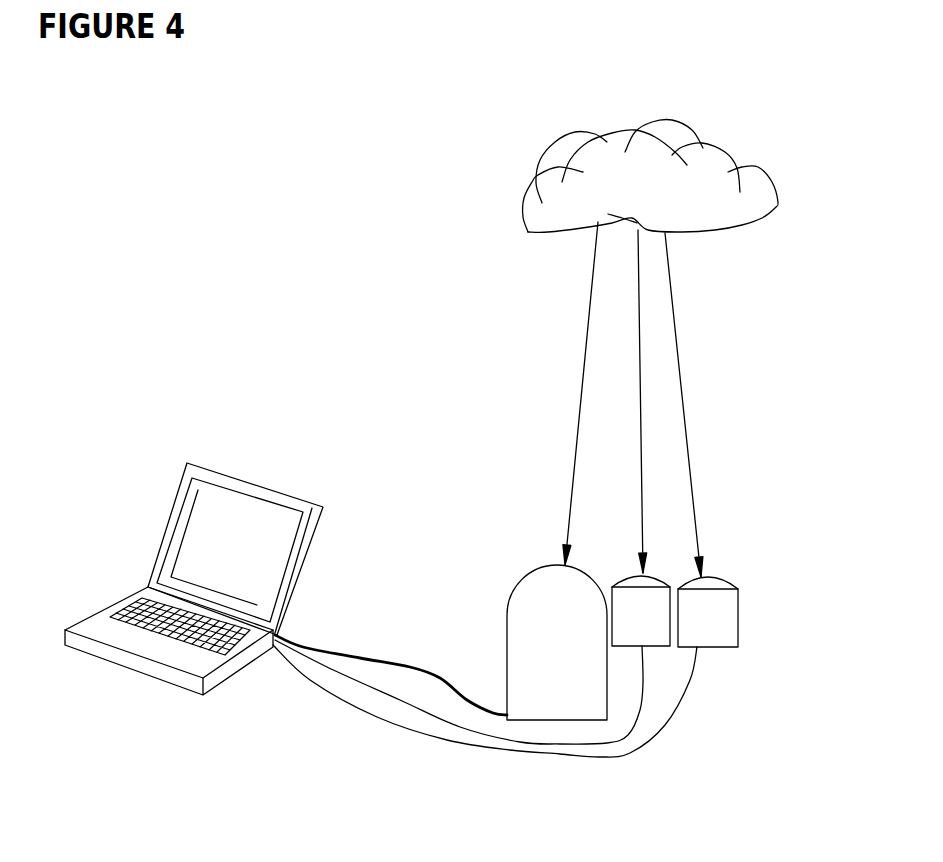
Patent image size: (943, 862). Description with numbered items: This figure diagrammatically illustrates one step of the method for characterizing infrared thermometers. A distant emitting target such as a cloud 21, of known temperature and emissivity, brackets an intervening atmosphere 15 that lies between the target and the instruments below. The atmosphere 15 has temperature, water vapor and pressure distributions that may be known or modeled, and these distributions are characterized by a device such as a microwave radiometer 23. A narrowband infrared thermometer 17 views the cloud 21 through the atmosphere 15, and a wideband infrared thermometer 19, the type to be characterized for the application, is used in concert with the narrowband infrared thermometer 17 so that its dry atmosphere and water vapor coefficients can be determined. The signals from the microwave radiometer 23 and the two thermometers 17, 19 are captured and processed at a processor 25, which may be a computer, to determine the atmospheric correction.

The atmosphere 15 is at (690, 390).
The narrowband infrared thermometer 17 is at (650, 588).
The wideband infrared thermometer 19 is at (730, 627).
The cloud 21 is at (728, 223).
The microwave radiometer 23 is at (523, 635).
The processor 25 is at (310, 507).